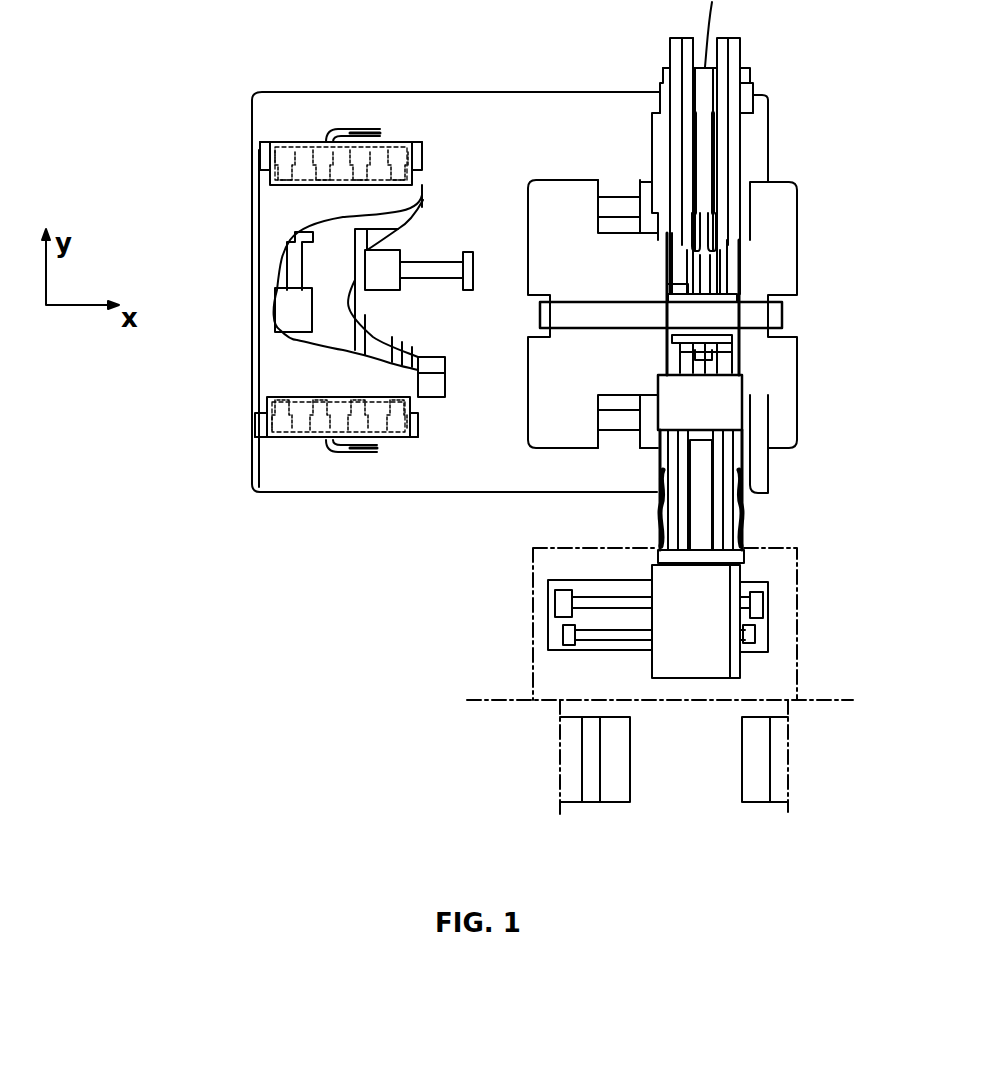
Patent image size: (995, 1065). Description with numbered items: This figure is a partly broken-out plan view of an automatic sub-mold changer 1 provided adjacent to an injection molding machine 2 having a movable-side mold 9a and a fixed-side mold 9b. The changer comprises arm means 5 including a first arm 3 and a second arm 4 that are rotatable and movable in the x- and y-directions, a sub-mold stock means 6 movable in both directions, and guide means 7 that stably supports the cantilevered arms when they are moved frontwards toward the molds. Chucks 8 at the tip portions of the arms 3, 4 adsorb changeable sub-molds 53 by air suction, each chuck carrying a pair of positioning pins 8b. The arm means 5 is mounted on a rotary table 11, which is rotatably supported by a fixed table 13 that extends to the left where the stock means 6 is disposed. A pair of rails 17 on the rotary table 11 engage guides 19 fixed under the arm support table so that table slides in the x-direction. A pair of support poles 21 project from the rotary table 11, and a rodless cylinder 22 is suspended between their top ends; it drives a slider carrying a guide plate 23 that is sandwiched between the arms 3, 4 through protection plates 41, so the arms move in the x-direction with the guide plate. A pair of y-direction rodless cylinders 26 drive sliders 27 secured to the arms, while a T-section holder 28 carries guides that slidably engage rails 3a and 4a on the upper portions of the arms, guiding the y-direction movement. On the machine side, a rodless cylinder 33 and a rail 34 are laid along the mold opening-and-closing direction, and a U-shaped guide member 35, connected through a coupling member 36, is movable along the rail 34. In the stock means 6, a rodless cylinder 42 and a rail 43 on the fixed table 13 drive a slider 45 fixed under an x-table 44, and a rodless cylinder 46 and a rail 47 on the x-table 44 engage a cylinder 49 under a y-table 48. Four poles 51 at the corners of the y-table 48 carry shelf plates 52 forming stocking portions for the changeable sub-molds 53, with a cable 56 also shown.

The automatic sub-mold changer 1 is at (824, 175).
The injection molding machine 2 is at (818, 705).
The first arm 3 is at (690, 46).
The rail 3a is at (674, 62).
The second arm 4 is at (725, 40).
The rail 4a is at (745, 62).
The arm means 5 is at (762, 68).
The sub-mold stock means 6 is at (306, 468).
The guide means 7 is at (782, 588).
The chucks 8 is at (658, 515).
The positioning pins 8b is at (745, 480).
The movable-side mold 9a is at (620, 765).
The fixed-side mold 9b is at (752, 770).
The rotary table 11 is at (778, 247).
The fixed table 13 is at (502, 107).
The rails 17 is at (618, 190).
The guides 19 is at (648, 190).
The support poles 21 is at (545, 295).
The cylinder 22 is at (668, 299).
The guide plate 23 is at (680, 291).
The cylinders 26 is at (662, 103).
The sliders 27 is at (657, 130).
The holder 28 is at (735, 410).
The cylinder 33 is at (590, 603).
The rail 34 is at (596, 638).
The U-shaped guide member 35 is at (681, 665).
The coupling member 36 is at (733, 655).
The protection plates 41 is at (735, 258).
The cylinder 42 is at (437, 270).
The rail 43 is at (430, 362).
The x-table 44 is at (408, 207).
The slider 45 is at (386, 285).
The rodless cylinder 46 is at (297, 270).
The rail 47 is at (390, 230).
The y-table 48 is at (275, 230).
The cylinder 49 is at (290, 316).
The poles 51 is at (266, 158).
The shelf plates 52 is at (385, 150).
The changeable sub-mold 53 is at (302, 183).
The cable 56 is at (340, 128).